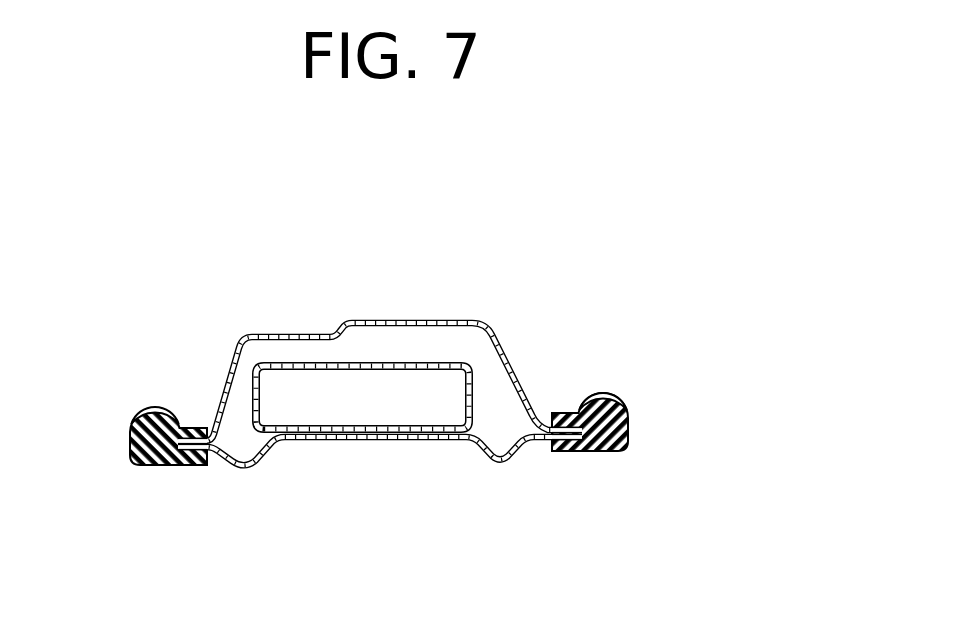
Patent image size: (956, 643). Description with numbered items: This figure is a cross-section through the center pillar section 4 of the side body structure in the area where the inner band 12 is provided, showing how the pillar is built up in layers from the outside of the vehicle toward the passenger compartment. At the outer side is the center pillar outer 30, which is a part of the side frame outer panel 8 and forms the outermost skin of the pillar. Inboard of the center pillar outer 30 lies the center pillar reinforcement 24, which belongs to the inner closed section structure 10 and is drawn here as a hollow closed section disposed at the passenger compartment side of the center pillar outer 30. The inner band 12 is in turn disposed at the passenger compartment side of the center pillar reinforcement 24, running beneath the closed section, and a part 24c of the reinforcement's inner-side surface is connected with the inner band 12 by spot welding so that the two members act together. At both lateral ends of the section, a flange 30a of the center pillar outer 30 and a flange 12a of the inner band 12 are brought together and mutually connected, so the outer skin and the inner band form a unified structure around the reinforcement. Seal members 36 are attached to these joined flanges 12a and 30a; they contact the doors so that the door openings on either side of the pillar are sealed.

The center pillar section 4 is at (512, 284).
The side frame outer panel 8 is at (381, 319).
The center pillar outer 30 is at (286, 335).
The flange of the center pillar outer 30a is at (186, 428).
The inner closed section structure 10 is at (362, 384).
The center pillar reinforcement 24 is at (380, 362).
The inner-side surface part of the center pillar reinforcement 24c is at (370, 424).
The inner band 12 is at (262, 468).
The flange of the inner band 12a is at (182, 465).
The seal member 36 is at (128, 436).